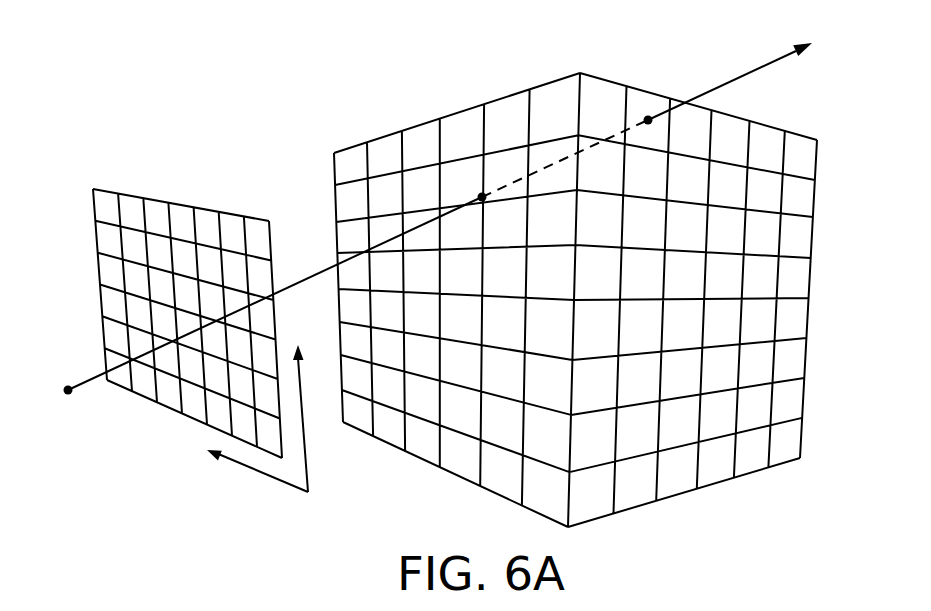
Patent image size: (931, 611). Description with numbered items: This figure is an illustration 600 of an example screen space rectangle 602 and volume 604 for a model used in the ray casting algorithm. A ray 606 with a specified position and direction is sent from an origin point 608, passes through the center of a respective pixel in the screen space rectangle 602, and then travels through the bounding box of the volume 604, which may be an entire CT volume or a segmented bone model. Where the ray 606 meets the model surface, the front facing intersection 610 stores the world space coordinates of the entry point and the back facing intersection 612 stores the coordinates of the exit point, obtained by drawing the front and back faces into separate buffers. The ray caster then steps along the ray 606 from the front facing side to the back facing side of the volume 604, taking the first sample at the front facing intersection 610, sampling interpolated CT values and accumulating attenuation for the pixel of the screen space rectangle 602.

The illustration 600 is at (151, 72).
The screen space rectangle 602 is at (175, 204).
The volume 604 is at (453, 114).
The ray 606 is at (735, 78).
The origin point 608 is at (68, 392).
The front facing intersection 610 is at (482, 199).
The back facing intersection 612 is at (647, 117).